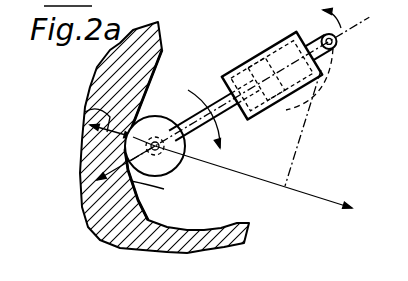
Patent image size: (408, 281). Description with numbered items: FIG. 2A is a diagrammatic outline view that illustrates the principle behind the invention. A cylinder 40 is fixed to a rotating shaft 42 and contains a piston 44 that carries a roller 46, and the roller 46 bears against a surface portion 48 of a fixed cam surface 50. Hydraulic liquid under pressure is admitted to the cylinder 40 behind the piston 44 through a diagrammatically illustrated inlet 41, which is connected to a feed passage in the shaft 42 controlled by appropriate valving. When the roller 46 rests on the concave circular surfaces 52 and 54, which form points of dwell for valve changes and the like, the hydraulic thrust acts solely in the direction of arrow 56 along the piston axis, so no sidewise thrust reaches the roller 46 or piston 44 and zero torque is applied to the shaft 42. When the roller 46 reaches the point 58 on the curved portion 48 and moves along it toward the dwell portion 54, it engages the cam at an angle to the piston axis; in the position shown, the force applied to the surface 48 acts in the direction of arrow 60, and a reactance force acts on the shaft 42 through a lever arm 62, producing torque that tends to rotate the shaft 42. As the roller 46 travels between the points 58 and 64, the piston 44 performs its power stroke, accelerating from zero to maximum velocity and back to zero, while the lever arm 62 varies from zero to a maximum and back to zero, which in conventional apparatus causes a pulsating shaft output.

The cylinder 40 is at (287, 33).
The inlet 41 is at (327, 59).
The rotating shaft 42 is at (337, 42).
The piston 44 is at (306, 107).
The roller 46 is at (207, 140).
The surface portion 48 is at (146, 88).
The cam surface 50 is at (160, 24).
The concave circular surface 52 is at (161, 42).
The dwell portion 54 is at (143, 200).
The arrow 56 is at (117, 172).
The point 58 is at (161, 57).
The arrow 60 is at (88, 115).
The lever arm 62 is at (300, 142).
The point 64 is at (162, 191).